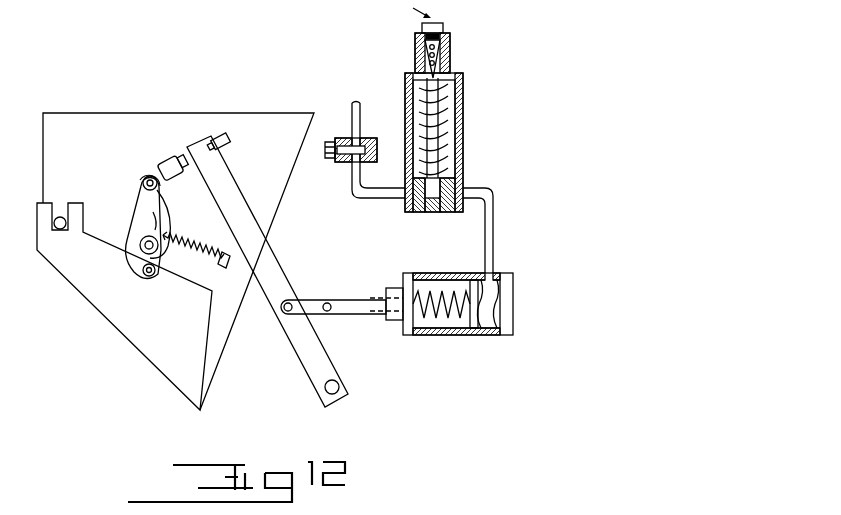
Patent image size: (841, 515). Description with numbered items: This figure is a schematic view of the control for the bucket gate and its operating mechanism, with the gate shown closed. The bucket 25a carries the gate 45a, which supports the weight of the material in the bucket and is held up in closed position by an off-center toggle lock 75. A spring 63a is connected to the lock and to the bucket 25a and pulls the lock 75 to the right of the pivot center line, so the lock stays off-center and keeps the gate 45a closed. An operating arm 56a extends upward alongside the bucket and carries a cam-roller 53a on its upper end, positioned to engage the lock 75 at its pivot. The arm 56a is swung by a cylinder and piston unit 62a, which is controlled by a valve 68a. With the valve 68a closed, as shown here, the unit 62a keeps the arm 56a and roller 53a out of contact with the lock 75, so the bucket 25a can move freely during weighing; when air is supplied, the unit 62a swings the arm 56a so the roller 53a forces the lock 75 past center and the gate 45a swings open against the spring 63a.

The bucket 25a is at (93, 107).
The gate 45a is at (142, 362).
The cam-rollers 53a is at (160, 165).
The toggle lock 75 is at (131, 189).
The spring 63a is at (198, 241).
The operating arms 56a is at (278, 266).
The valve 68a is at (466, 59).
The cylinder and piston unit 62a is at (516, 268).